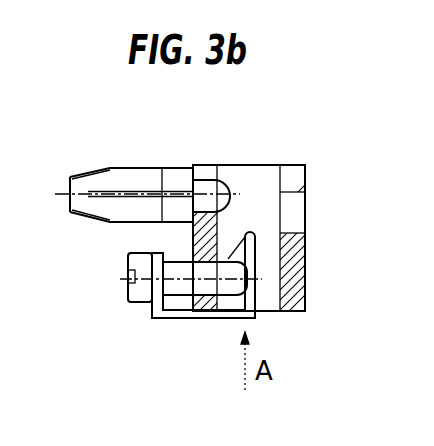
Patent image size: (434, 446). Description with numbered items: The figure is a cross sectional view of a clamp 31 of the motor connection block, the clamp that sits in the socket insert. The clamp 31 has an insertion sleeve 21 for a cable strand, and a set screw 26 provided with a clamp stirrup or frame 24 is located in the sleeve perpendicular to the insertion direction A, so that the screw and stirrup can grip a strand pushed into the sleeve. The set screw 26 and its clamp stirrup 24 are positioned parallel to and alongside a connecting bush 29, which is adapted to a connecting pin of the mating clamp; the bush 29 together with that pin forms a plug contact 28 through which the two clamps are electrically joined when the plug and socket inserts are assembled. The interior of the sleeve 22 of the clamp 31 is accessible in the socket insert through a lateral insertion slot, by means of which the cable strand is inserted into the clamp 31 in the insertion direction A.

The insertion sleeve 21 is at (302, 172).
The sleeve 22 is at (250, 224).
The clamp stirrup 24 is at (178, 318).
The set screw 26 is at (135, 302).
The plug contact 28 is at (73, 158).
The connecting bush 29 is at (85, 186).
The clamp 31 is at (298, 265).